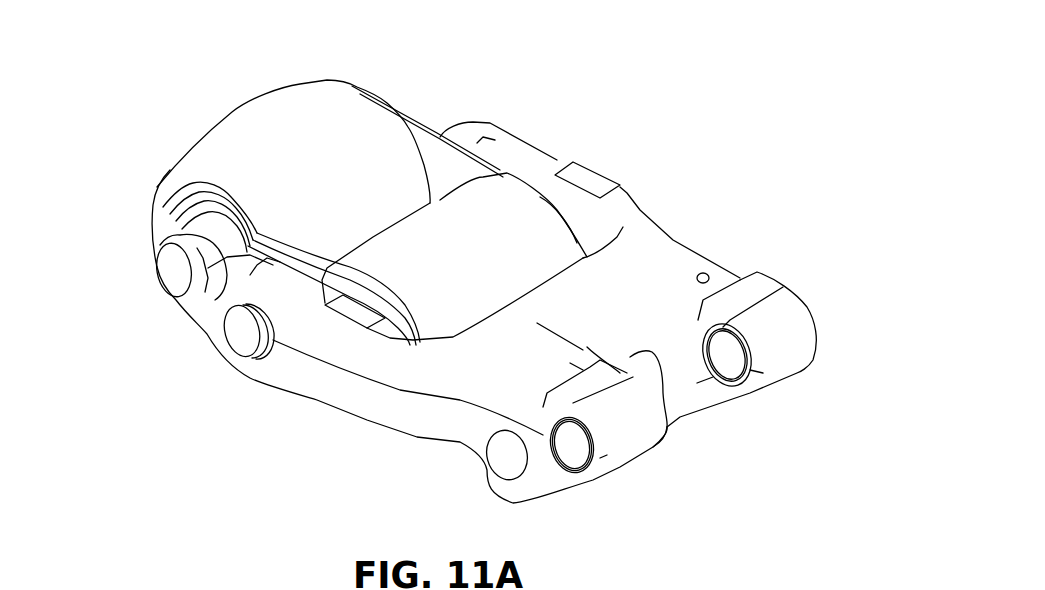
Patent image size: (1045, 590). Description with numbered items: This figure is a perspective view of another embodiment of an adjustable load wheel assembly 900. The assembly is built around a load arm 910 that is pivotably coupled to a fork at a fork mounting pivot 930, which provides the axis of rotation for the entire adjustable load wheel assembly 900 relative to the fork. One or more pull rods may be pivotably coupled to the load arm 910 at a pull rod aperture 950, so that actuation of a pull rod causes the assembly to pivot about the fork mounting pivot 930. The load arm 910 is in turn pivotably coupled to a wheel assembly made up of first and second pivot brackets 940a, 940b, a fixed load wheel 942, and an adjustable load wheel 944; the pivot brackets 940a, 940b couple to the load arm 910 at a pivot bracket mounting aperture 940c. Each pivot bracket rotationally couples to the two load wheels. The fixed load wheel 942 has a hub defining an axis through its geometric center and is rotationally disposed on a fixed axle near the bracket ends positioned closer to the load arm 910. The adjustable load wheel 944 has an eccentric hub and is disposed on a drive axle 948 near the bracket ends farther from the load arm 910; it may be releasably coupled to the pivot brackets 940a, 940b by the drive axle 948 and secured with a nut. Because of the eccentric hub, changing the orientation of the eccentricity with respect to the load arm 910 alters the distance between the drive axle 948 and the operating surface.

The adjustable load wheel assembly 900 is at (714, 89).
The load arm 910 is at (672, 232).
The fork mounting pivot 930 is at (497, 463).
The first pivot bracket 940a is at (438, 148).
The second pivot bracket 940b is at (250, 238).
The pivot bracket mounting aperture 940c is at (233, 338).
The fixed load wheel 942 is at (525, 198).
The adjustable load wheel 944 is at (338, 98).
The drive axle 948 is at (163, 278).
The pull rod aperture 950 is at (813, 313).